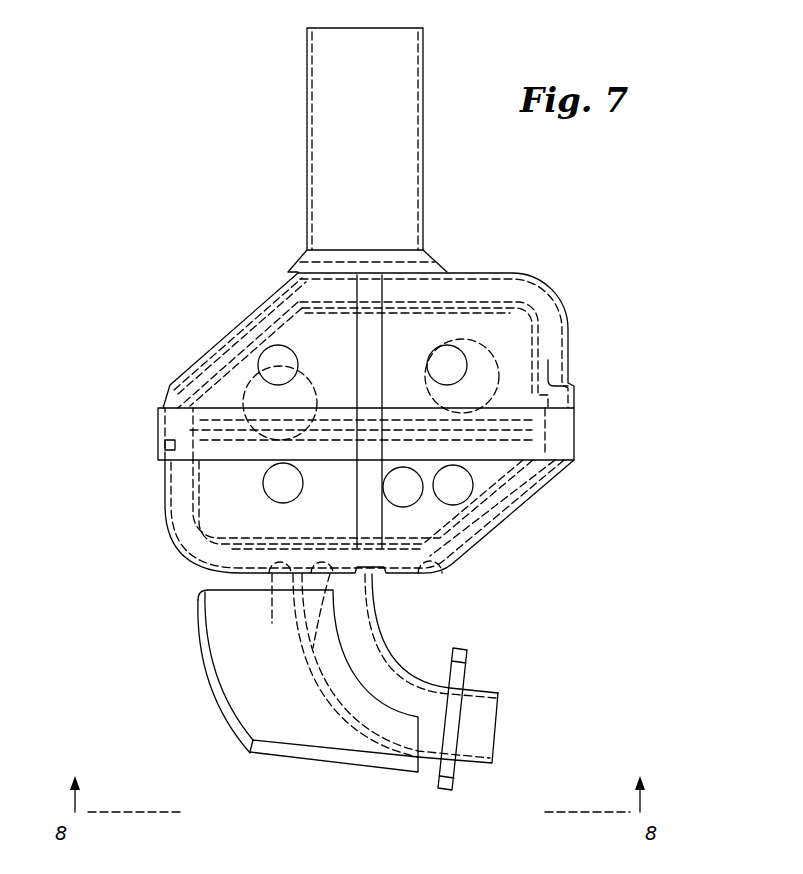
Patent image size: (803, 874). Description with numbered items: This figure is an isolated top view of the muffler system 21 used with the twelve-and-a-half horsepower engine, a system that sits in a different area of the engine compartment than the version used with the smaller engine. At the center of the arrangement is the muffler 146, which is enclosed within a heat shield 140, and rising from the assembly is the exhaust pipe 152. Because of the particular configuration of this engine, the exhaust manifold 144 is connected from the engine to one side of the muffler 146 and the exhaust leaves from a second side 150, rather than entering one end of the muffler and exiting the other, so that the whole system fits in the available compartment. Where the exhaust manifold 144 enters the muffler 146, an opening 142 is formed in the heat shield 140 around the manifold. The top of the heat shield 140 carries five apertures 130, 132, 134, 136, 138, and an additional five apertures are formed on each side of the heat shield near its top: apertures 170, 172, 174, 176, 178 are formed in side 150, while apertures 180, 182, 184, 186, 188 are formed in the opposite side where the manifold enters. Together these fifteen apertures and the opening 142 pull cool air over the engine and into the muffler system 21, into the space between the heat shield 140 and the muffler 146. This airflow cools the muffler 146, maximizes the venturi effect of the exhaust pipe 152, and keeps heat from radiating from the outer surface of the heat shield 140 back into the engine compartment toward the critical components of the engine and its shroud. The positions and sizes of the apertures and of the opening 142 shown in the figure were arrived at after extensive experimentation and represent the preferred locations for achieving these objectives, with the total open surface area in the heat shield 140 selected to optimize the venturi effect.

The muffler system 21 is at (248, 252).
The aperture 130 is at (278, 362).
The aperture 132 is at (440, 362).
The aperture 134 is at (455, 485).
The aperture 136 is at (403, 487).
The aperture 138 is at (277, 488).
The heat shield 140 is at (578, 330).
The opening 142 is at (372, 590).
The exhaust manifold 144 is at (480, 700).
The muffler 146 is at (554, 318).
The second side 150 is at (503, 272).
The exhaust pipe 152 is at (415, 26).
The aperture 170 is at (452, 275).
The aperture 172 is at (420, 270).
The aperture 174 is at (330, 278).
The aperture 176 is at (250, 310).
The aperture 178 is at (213, 345).
The aperture 180 is at (540, 485).
The aperture 182 is at (492, 533).
The aperture 184 is at (440, 572).
The aperture 186 is at (305, 647).
The aperture 188 is at (272, 615).